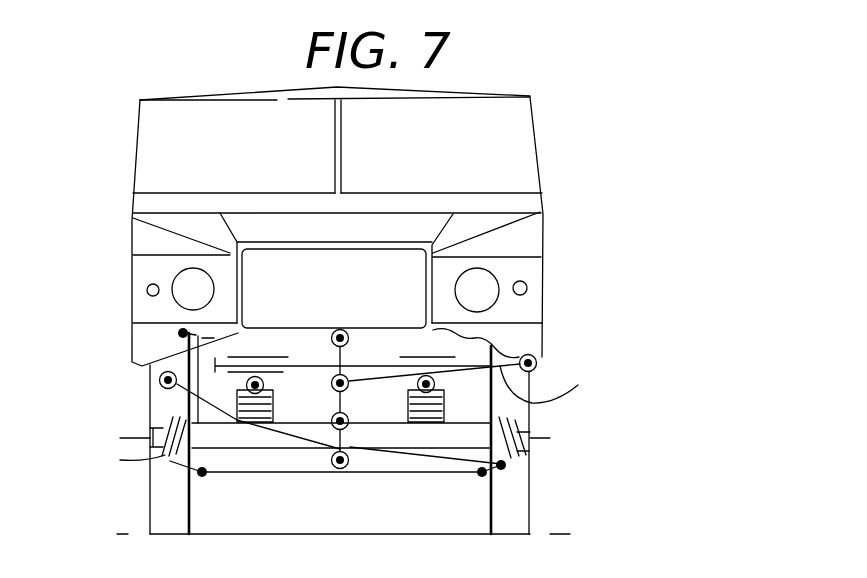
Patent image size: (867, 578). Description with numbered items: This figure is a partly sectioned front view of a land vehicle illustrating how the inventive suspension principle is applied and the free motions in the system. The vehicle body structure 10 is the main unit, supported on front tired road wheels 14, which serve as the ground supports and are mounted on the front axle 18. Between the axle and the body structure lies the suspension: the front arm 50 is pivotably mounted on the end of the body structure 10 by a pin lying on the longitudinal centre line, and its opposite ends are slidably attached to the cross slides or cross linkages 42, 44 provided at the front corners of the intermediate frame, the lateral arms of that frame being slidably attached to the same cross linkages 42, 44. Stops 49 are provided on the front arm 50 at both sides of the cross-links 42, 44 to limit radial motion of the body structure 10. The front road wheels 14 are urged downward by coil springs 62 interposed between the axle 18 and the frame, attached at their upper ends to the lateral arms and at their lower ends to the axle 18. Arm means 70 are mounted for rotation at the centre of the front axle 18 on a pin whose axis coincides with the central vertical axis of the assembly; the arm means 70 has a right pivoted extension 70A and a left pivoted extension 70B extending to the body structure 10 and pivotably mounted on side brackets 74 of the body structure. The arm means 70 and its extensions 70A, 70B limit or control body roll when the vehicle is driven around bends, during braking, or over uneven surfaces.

The vehicle chassis/body structure 10 is at (420, 343).
The front tired road wheels 14 is at (167, 502).
The front axle 18 is at (285, 442).
The cross linkage 42 is at (247, 357).
The cross linkage 44 is at (440, 375).
The stops 49 is at (293, 373).
The front arm 50 is at (375, 372).
The coil springs 62 is at (273, 421).
The arm means 70 is at (350, 400).
The right pivoted extension 70A is at (157, 452).
The left pivoted extension 70B is at (574, 410).
The brackets 74 is at (167, 371).